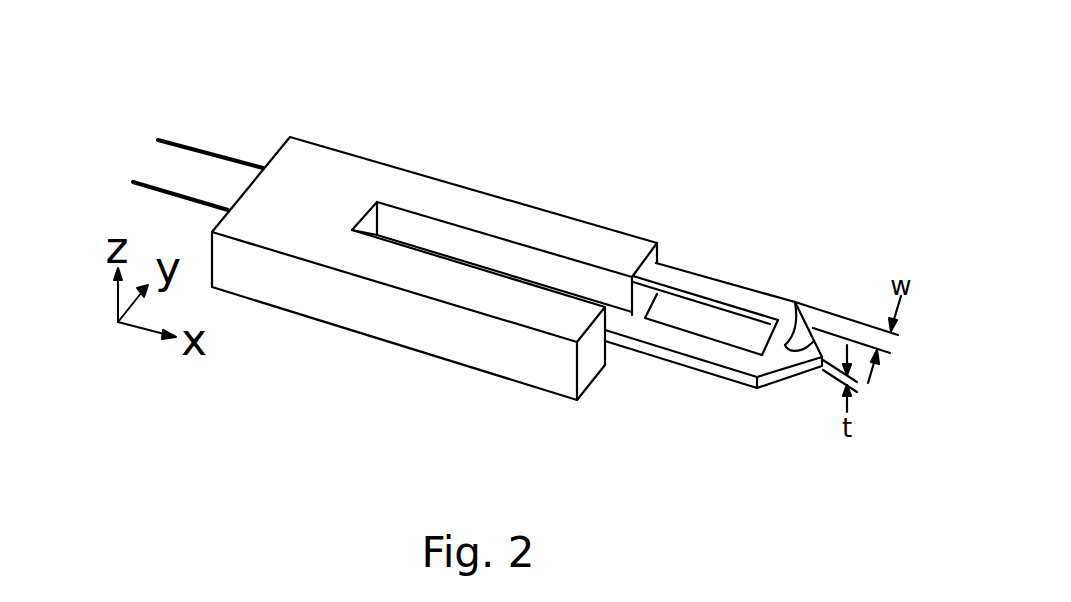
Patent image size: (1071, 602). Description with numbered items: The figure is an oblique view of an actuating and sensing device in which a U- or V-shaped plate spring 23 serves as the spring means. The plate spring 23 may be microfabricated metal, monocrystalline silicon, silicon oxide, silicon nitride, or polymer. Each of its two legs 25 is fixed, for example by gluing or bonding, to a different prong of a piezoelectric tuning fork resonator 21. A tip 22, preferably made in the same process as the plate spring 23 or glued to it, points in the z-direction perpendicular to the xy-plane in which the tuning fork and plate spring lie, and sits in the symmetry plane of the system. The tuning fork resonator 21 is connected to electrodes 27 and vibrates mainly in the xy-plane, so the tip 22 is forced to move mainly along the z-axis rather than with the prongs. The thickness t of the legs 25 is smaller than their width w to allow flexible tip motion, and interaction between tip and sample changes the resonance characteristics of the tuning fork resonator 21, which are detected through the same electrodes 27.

The piezoelectric tuning fork resonator 21 is at (358, 180).
The tip 22 is at (795, 343).
The plate spring 23 is at (848, 300).
The legs 25 is at (690, 285).
The electrodes 27 is at (165, 190).